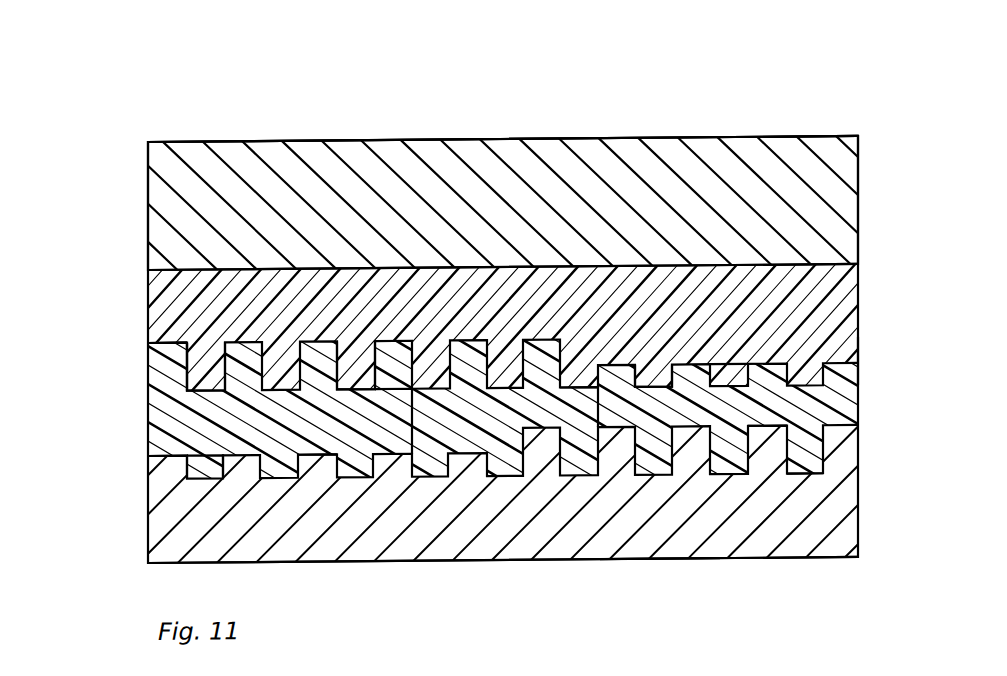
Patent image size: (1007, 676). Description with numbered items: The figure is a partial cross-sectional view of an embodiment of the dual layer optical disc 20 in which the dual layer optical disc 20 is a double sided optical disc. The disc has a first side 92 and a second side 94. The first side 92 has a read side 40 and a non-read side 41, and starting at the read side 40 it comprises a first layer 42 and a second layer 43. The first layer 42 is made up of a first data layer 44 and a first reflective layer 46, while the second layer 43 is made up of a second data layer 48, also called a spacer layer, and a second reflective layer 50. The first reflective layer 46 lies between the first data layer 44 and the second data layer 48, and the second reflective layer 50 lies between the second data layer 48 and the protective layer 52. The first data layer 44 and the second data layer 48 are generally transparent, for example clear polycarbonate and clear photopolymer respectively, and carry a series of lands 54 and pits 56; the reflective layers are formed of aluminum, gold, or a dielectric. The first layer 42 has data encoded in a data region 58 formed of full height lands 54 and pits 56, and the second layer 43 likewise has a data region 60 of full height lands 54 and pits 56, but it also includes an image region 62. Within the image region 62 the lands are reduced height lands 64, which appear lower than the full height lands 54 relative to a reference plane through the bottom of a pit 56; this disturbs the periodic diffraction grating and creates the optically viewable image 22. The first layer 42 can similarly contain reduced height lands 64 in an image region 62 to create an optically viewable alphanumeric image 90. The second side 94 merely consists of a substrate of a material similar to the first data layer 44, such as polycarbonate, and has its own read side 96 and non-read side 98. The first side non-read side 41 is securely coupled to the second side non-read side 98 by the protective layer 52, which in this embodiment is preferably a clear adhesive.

The dual layer optical disc 20 is at (778, 92).
The optically viewable image 22 is at (725, 365).
The read side 40 is at (450, 565).
The non-read side 41 is at (134, 182).
The first layer 42 is at (137, 525).
The second layer 43 is at (137, 335).
The first data layer 44 is at (150, 538).
The first reflective layer 46 is at (150, 474).
The second data layer 48 is at (158, 410).
The second reflective layer 50 is at (158, 379).
The protective layer 52 is at (205, 391).
The full height lands 54 is at (165, 342).
The pits 56 is at (147, 299).
The data region 58 is at (590, 424).
The data region 60 is at (370, 325).
The image region 62 is at (228, 448).
The reduced height lands 64 is at (312, 455).
The optically viewable alphanumeric image 90 is at (423, 420).
The first side 92 is at (660, 562).
The second side 94 is at (623, 141).
The read side 96 is at (384, 141).
The non-read side 98 is at (840, 278).